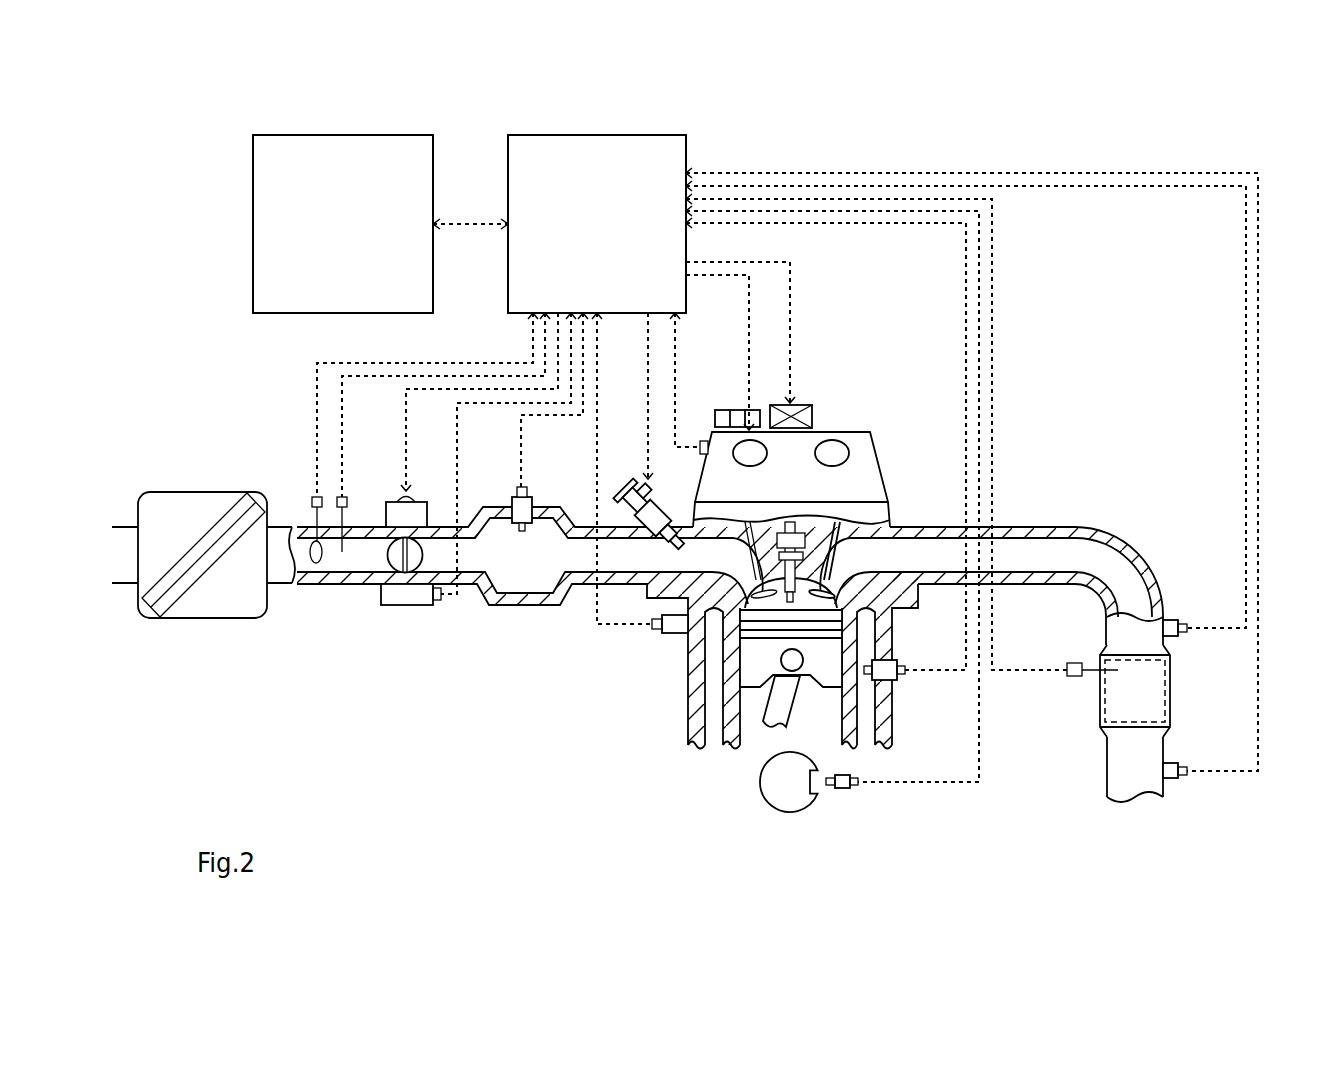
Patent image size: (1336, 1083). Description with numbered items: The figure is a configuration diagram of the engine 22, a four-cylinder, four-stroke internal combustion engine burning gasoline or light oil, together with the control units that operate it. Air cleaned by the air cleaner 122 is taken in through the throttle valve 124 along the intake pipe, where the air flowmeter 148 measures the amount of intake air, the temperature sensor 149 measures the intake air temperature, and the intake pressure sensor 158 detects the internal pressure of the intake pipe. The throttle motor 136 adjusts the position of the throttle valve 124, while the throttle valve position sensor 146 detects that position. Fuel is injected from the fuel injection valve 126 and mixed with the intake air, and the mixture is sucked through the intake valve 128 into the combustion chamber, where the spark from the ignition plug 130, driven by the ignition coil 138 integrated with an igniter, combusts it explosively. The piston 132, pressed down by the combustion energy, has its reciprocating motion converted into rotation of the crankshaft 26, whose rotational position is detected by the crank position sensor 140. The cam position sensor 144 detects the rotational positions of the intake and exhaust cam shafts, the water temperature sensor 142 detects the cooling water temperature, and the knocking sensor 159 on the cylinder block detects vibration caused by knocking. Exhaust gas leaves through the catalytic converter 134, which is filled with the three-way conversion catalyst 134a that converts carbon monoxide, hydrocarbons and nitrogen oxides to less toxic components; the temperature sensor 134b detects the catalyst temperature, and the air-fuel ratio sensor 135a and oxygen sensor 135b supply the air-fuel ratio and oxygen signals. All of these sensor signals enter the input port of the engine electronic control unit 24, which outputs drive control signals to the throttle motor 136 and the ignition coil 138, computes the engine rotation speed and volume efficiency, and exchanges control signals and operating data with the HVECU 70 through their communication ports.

The engine 22 is at (910, 388).
The engine electronic control unit 24 is at (600, 135).
The crankshaft 26 is at (760, 781).
The HVECU 70 is at (343, 135).
The air cleaner 122 is at (200, 492).
The throttle valve 124 is at (423, 562).
The fuel injection valve 126 is at (616, 483).
The intake valve 128 is at (755, 573).
The ignition plug 130 is at (822, 560).
The piston 132 is at (757, 674).
The catalytic converter 134 is at (1083, 691).
The conversion catalyst 134a is at (1112, 695).
The temperature sensor 134b is at (1073, 662).
The air-fuel ratio sensor 135a is at (1168, 620).
The oxygen sensor 135b is at (1168, 778).
The throttle motor 136 is at (418, 500).
The ignition coil 138 is at (800, 405).
The crank position sensor 140 is at (843, 789).
The water temperature sensor 142 is at (900, 660).
The cam position sensor 144 is at (702, 441).
The throttle valve position sensor 146 is at (396, 606).
The air flowmeter 148 is at (312, 497).
The temperature sensor 149 is at (348, 497).
The intake pressure sensor 158 is at (533, 497).
The knocking sensor 159 is at (672, 634).